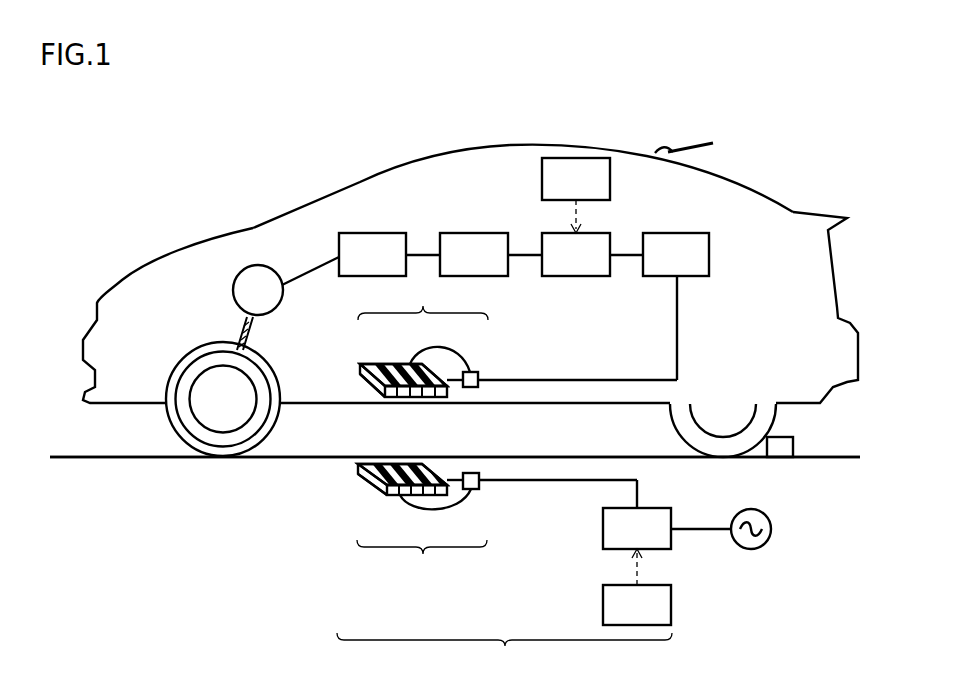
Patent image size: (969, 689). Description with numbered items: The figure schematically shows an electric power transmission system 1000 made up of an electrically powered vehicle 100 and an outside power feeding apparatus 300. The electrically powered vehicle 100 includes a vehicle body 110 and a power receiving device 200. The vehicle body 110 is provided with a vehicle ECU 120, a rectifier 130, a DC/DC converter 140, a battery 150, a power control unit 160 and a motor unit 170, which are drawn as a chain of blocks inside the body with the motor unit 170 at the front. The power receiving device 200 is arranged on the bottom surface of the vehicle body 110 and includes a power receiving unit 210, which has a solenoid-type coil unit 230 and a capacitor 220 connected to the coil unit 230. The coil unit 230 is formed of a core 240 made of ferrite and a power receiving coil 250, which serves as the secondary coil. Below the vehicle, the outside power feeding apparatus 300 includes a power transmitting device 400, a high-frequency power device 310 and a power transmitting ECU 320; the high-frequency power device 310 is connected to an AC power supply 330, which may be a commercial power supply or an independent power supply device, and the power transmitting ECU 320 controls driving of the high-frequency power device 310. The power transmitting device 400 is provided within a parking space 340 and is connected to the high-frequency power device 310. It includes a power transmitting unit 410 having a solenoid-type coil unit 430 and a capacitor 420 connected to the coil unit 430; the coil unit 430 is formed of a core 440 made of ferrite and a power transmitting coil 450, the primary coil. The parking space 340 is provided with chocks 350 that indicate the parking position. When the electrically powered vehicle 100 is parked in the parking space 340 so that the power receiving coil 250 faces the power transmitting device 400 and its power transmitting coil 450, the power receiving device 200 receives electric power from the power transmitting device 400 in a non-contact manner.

The electric power transmission system 1000 is at (166, 107).
The electrically powered vehicle 100 is at (296, 189).
The vehicle body 110 is at (510, 142).
The vehicle ECU 120 is at (610, 180).
The rectifier 130 is at (685, 233).
The DC/DC converter 140 is at (585, 233).
The battery 150 is at (483, 233).
The power control unit 160 is at (380, 233).
The motor unit 170 is at (263, 267).
The power receiving device 200 is at (512, 368).
The power receiving unit 210 is at (423, 300).
The capacitor 220 is at (470, 372).
The coil unit 230 is at (391, 353).
The core 240 is at (358, 367).
The power receiving coil 250 is at (367, 380).
The outside power feeding apparatus 300 is at (504, 650).
The high-frequency power device 310 is at (655, 505).
The power transmitting ECU 320 is at (655, 585).
The AC power supply 330 is at (765, 505).
The parking space 340 is at (581, 456).
The chocks 350 is at (793, 437).
The power transmitting device 400 is at (512, 492).
The power transmitting unit 410 is at (422, 559).
The capacitor 420 is at (471, 490).
The coil unit 430 is at (392, 506).
The core 440 is at (378, 487).
The power transmitting coil 450 is at (380, 475).